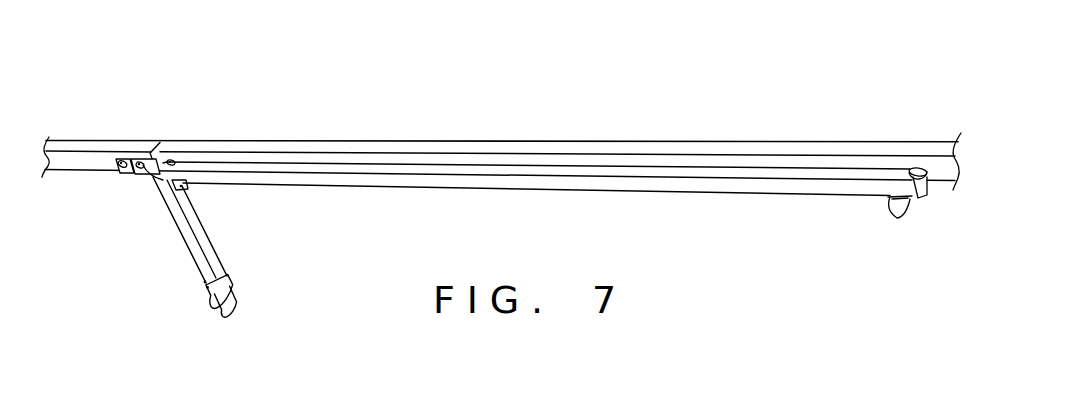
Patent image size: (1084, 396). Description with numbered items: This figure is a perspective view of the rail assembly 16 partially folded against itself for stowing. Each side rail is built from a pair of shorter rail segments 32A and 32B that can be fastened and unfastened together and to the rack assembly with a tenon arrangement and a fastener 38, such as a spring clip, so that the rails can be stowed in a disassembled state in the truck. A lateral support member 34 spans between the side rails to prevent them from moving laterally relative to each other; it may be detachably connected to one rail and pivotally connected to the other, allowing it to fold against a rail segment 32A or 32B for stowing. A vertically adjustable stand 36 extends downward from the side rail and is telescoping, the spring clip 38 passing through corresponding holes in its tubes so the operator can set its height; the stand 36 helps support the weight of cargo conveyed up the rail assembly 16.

The rail assembly 16 is at (747, 128).
The rail segment 32A is at (583, 147).
The rear rail segment 32B is at (71, 147).
The lateral support member 34 is at (655, 182).
The vertically adjustable stand 36 is at (183, 248).
The fastener 38 is at (153, 178).